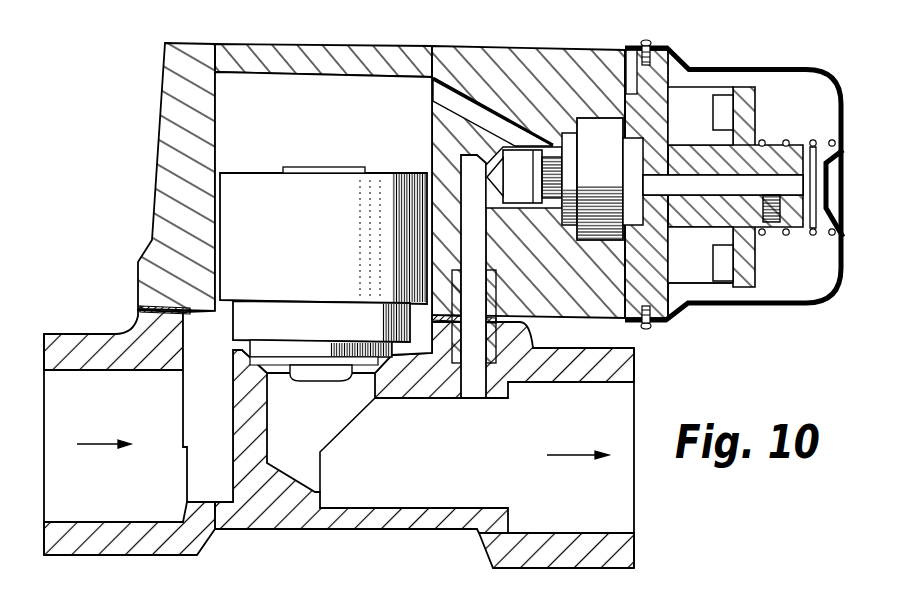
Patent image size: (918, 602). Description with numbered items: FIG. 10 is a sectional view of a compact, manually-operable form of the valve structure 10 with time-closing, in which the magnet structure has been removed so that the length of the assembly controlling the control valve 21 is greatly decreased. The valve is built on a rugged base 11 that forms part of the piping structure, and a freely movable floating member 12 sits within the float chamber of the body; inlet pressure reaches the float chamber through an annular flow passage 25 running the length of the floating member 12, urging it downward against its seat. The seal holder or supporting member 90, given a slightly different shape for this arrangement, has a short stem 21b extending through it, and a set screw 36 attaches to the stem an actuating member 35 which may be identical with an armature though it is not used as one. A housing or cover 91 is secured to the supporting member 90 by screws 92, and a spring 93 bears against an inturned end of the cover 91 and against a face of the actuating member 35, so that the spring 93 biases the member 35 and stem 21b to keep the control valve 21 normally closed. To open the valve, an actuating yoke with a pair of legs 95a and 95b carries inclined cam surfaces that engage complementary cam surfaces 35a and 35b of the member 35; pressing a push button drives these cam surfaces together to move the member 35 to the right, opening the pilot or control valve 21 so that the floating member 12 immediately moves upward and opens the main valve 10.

The valve structure 10 is at (443, 293).
The base 11 is at (295, 531).
The floating member 12 is at (388, 186).
The control valve 21 is at (522, 160).
The stem 21b is at (695, 180).
The annular flow passage 25 is at (218, 170).
The actuating member 35 is at (753, 121).
The cam surface 35a is at (725, 100).
The cam surface 35b is at (722, 275).
The set screw 36 is at (773, 224).
The supporting member 90 is at (664, 323).
The housing or cover 91 is at (800, 67).
The screws 92 is at (641, 46).
The spring 93 is at (813, 234).
The leg of actuating yoke 95a is at (705, 92).
The leg of actuating yoke 95b is at (698, 270).